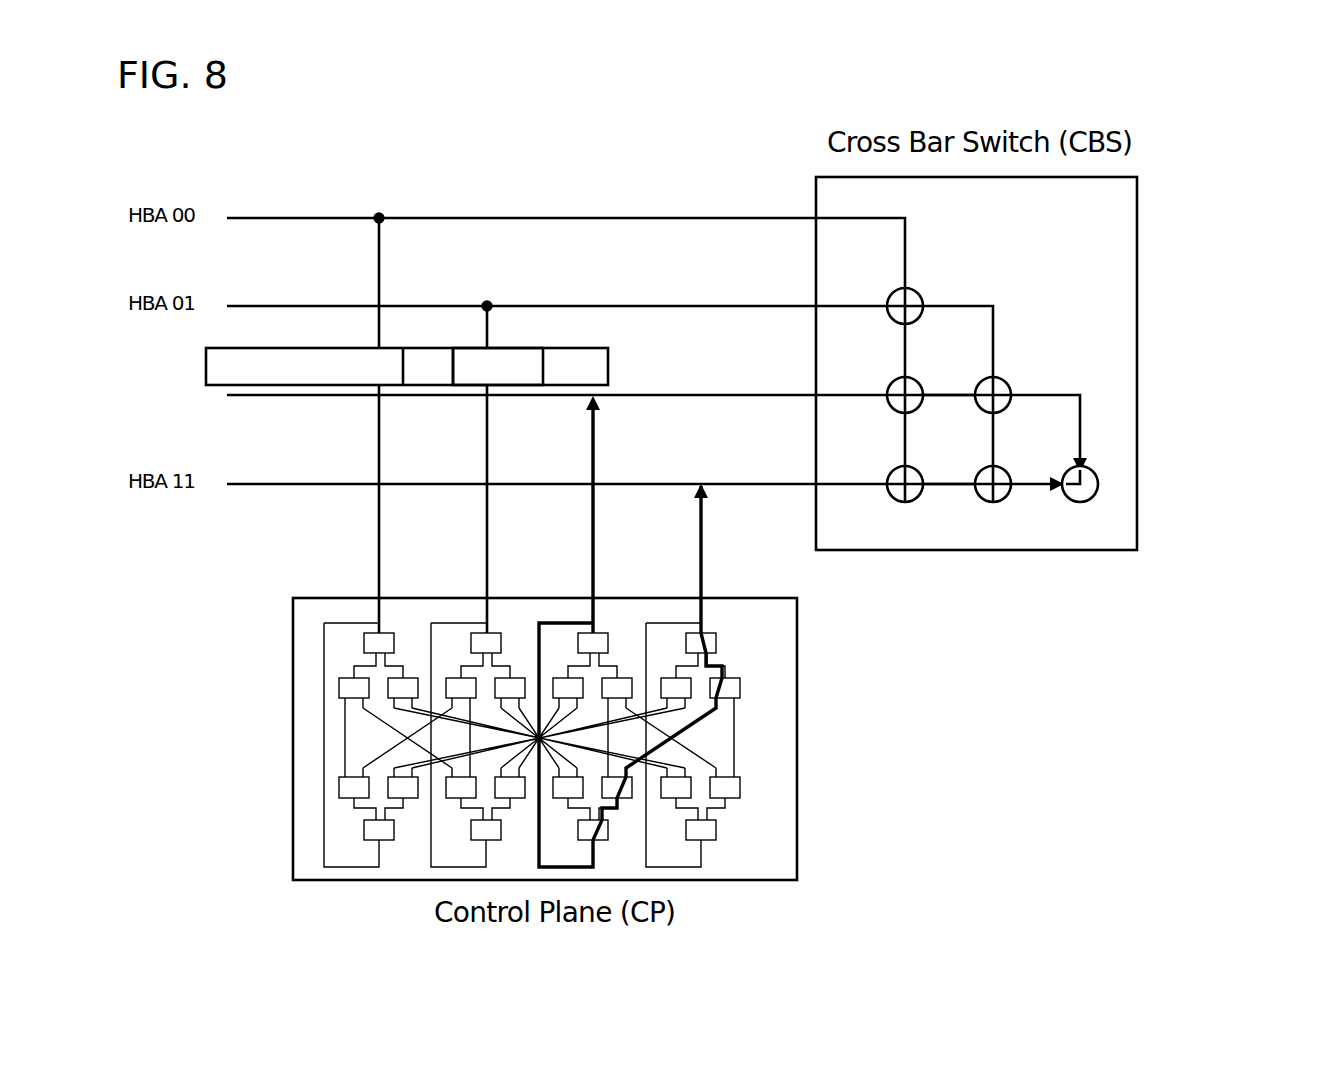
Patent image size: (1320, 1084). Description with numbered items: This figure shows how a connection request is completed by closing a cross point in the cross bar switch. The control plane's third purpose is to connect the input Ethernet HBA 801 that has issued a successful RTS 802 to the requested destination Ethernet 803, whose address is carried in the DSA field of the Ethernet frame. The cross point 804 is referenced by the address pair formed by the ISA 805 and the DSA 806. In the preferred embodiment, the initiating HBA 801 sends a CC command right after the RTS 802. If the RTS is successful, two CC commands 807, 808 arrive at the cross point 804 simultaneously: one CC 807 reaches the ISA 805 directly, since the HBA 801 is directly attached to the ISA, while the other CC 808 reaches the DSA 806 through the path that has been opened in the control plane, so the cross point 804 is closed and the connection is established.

The input Ethernet HBA 801 is at (157, 408).
The RTS 802 is at (454, 352).
The requested destination Ethernet 803 is at (513, 347).
The cross point 804 is at (1098, 496).
The ISA 805 is at (192, 403).
The DSA 806 is at (183, 497).
The CC 807 is at (1117, 422).
The CC 808 is at (1035, 481).